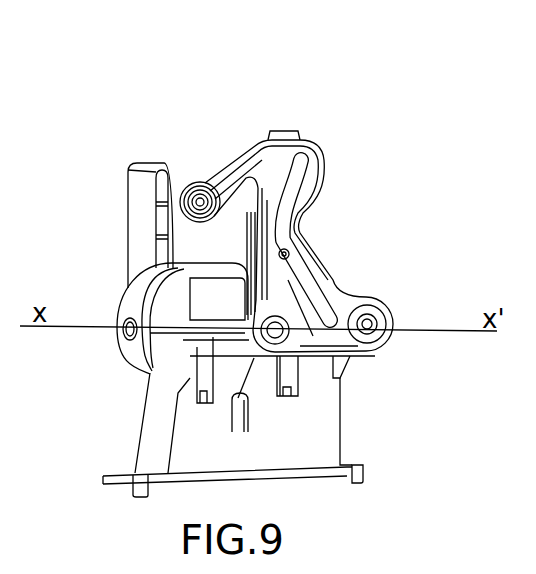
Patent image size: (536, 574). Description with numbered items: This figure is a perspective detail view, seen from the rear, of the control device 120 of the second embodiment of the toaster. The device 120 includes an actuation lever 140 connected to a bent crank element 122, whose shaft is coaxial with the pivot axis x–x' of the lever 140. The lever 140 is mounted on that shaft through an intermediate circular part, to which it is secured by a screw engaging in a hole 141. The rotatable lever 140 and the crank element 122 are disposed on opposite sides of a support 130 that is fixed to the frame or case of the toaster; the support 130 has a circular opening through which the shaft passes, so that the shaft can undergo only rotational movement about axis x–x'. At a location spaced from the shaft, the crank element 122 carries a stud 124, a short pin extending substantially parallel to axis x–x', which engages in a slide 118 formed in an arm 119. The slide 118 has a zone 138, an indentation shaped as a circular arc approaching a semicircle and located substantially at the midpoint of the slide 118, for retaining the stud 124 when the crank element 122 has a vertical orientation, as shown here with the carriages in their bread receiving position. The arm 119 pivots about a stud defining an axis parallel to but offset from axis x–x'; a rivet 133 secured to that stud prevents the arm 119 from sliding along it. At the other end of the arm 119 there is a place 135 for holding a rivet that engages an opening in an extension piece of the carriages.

The slide 118 is at (305, 157).
The arm 119 is at (300, 222).
The device 120 is at (160, 152).
The bent crank element 122 is at (232, 329).
The stud 124 is at (303, 240).
The support 130 is at (308, 428).
The rivet 133 is at (380, 323).
The place for holding a rivet 135 is at (198, 182).
The zone 138 is at (290, 270).
The actuation lever 140 is at (137, 230).
The hole 141 is at (124, 336).